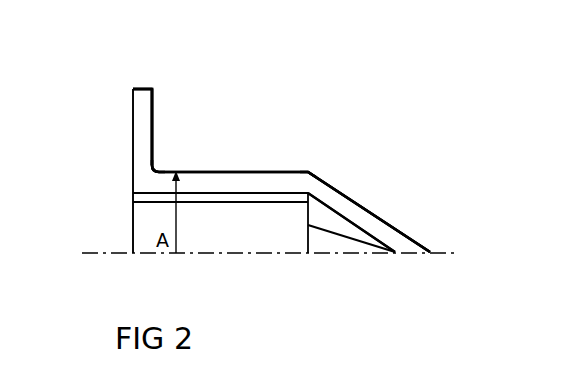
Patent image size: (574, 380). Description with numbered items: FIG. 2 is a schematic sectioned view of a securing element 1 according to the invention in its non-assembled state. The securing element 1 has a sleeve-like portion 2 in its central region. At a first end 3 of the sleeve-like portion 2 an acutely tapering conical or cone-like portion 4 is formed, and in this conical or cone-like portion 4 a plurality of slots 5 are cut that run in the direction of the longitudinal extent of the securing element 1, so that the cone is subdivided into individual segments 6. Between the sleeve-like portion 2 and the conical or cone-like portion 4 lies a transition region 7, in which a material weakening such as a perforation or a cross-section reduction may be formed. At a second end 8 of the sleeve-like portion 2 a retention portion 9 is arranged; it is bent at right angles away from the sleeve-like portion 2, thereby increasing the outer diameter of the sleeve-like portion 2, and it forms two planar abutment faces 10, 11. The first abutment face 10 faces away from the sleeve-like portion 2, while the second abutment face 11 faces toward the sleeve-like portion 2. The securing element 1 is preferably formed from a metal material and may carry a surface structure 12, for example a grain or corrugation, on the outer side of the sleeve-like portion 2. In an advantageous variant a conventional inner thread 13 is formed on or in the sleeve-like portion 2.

The securing element 1 is at (414, 52).
The sleeve-like portion 2 is at (258, 178).
The first end 3 is at (307, 171).
The conical or cone-like portion 4 is at (378, 218).
The slots 5 is at (355, 240).
The segments 6 is at (331, 248).
The transition region 7 is at (320, 185).
The second end 8 is at (133, 186).
The retention portion 9 is at (145, 93).
The first abutment face 10 is at (133, 124).
The second abutment face 11 is at (153, 125).
The surface structure 12 is at (228, 171).
The inner thread 13 is at (240, 200).